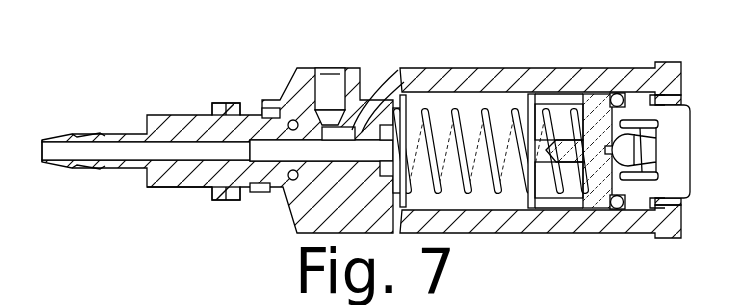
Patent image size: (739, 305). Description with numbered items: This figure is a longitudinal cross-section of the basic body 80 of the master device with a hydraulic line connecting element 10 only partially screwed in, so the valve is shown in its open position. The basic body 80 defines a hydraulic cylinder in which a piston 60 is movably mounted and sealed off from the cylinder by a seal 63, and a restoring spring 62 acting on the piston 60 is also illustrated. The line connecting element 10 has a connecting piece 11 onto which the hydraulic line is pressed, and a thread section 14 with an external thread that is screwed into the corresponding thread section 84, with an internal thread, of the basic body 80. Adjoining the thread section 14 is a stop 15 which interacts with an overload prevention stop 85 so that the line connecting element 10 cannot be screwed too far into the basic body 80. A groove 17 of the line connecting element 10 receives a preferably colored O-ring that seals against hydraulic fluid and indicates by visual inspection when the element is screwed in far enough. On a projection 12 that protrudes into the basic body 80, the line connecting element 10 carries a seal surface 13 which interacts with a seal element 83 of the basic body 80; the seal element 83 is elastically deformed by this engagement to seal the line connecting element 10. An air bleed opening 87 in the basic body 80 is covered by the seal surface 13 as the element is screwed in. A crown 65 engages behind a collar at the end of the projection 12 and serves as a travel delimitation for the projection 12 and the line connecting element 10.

The line connecting element 10 is at (167, 172).
The connecting piece 11 is at (90, 163).
The projection 12 is at (382, 127).
The seal surface 13 is at (337, 130).
The thread section 14 is at (222, 113).
The stop 15 is at (258, 188).
The groove 17 is at (200, 187).
The piston 60 is at (593, 200).
The restoring spring 62 is at (500, 187).
The seal 63 is at (616, 205).
The crown or travel delimitation 65 is at (400, 100).
The basic body 80 is at (510, 80).
The seal element 83 is at (363, 110).
The thread section 84 is at (240, 190).
The overload prevention stop 85 is at (270, 100).
The air bleed opening 87 is at (316, 98).